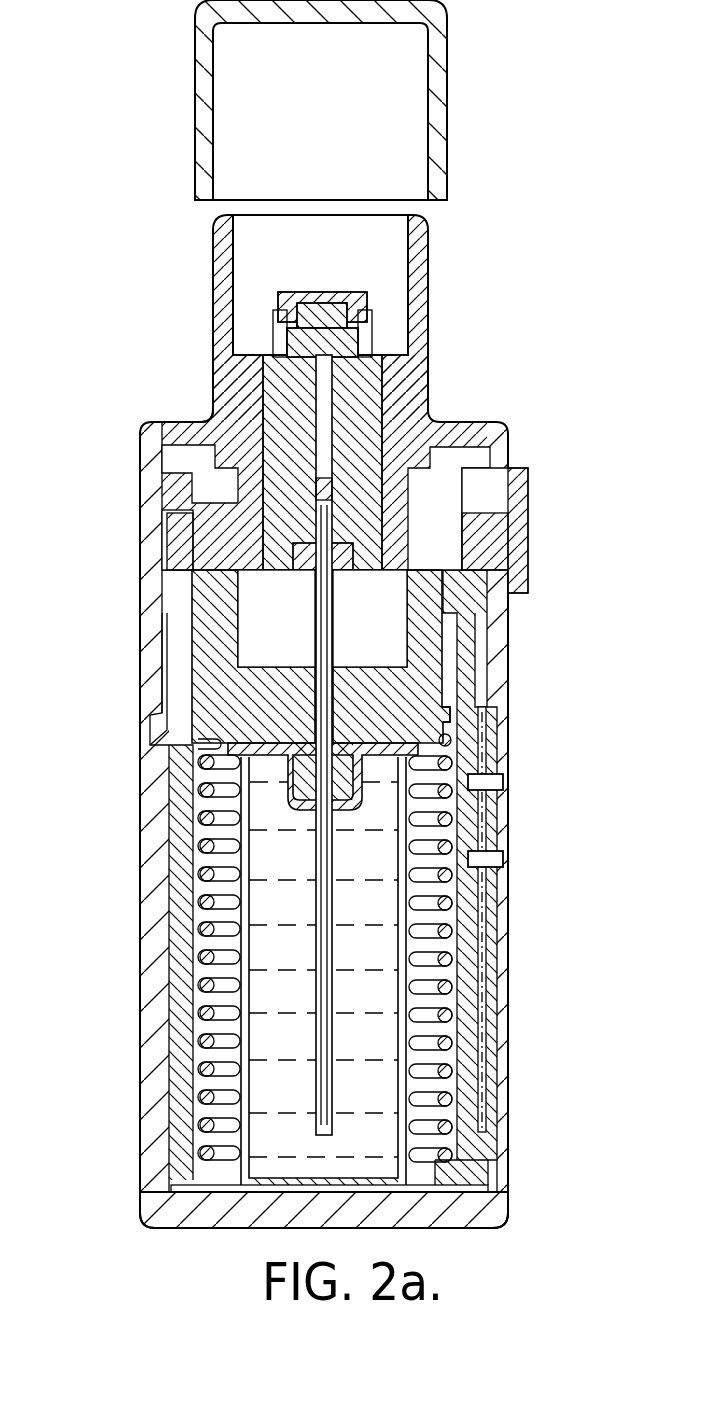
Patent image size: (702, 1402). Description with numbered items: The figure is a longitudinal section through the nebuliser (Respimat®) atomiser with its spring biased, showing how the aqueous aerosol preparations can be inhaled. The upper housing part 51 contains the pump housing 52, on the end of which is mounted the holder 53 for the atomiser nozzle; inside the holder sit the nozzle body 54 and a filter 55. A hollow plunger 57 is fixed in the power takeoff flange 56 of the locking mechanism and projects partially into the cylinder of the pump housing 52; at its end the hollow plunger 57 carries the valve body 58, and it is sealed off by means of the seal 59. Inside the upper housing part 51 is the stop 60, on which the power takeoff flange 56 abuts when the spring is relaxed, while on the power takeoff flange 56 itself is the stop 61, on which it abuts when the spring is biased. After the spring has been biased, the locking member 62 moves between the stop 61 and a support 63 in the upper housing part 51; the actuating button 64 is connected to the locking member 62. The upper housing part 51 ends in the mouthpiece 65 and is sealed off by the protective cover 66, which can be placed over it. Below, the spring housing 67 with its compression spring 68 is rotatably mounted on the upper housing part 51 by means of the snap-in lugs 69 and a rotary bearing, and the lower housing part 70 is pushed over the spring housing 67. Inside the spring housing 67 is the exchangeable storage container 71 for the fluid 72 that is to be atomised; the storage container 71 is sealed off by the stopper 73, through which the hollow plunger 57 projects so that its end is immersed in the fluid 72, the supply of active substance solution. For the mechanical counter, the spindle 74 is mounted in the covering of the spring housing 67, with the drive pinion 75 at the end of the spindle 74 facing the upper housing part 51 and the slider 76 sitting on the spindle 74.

The upper housing part 51 is at (405, 365).
The pump housing 52 is at (362, 435).
The holder 53 is at (365, 298).
The nozzle body 54 is at (318, 300).
The filter 55 is at (292, 335).
The power takeoff flange 56 is at (215, 673).
The hollow plunger 57 is at (318, 903).
The valve body 58 is at (310, 490).
The seal 59 is at (350, 542).
The stop 60 is at (448, 722).
The stop 61 is at (245, 580).
The locking member 62 is at (193, 547).
The support 63 is at (175, 476).
The actuating button 64 is at (530, 482).
The mouthpiece 65 is at (445, 232).
The protective cover 66 is at (438, 78).
The spring housing 67 is at (470, 1168).
The compression spring 68 is at (455, 1070).
The snap-in lugs 69 is at (163, 712).
The lower housing part 70 is at (445, 1210).
The storage container 71 is at (205, 873).
The fluid 72 is at (280, 1030).
The stopper 73 is at (386, 760).
The spindle 74 is at (495, 829).
The drive pinion 75 is at (503, 781).
The slider 76 is at (503, 866).